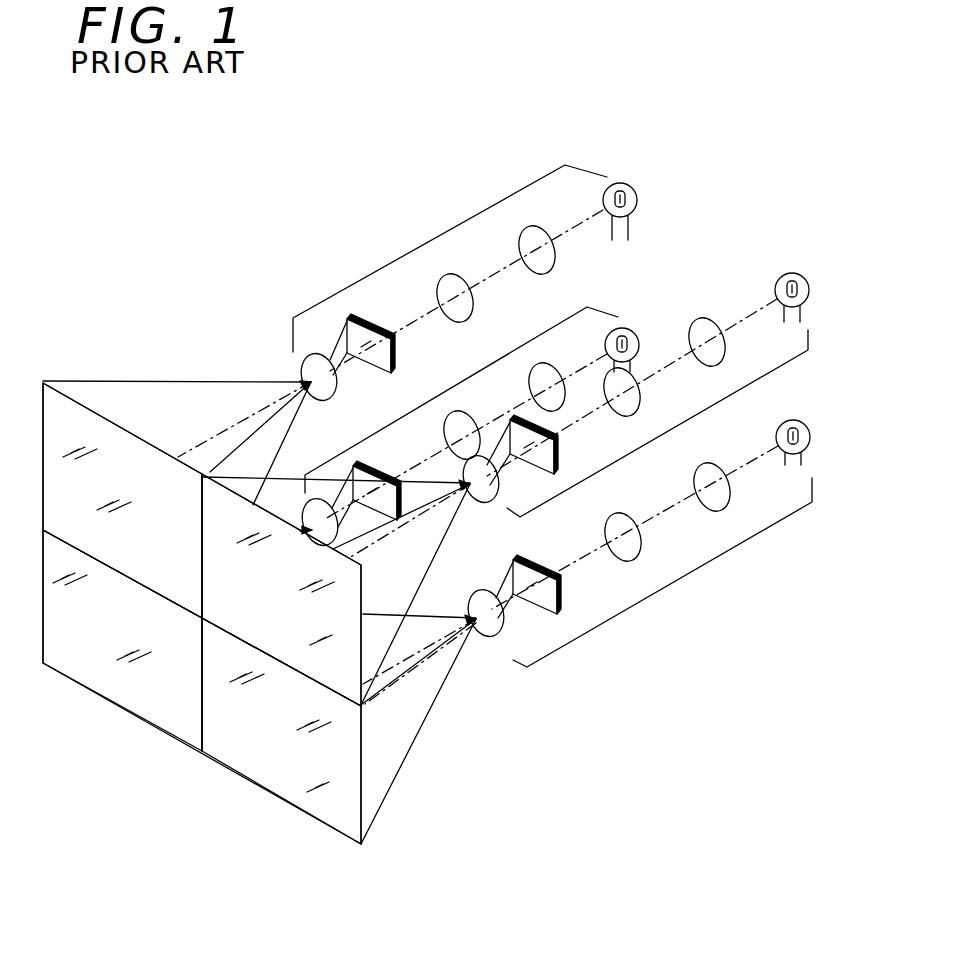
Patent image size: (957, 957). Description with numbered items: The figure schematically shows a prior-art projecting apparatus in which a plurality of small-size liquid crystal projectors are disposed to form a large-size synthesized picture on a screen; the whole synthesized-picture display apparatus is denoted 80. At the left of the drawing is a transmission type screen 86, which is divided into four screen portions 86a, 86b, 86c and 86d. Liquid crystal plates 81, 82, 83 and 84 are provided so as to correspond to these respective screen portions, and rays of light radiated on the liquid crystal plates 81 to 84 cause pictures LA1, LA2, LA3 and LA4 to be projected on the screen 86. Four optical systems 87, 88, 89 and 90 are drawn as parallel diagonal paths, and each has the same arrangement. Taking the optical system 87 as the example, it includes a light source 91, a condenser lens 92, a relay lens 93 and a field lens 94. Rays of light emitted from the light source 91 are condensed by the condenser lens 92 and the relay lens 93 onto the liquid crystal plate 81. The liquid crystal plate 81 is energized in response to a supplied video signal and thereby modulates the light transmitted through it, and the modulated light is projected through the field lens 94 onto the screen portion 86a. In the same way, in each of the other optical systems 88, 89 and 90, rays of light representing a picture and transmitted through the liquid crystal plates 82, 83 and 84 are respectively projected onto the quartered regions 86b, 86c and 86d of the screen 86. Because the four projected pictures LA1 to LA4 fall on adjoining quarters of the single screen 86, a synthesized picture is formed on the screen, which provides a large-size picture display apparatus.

The synthesized-picture display apparatus 80 is at (245, 157).
The liquid crystal plate 81 is at (573, 600).
The liquid crystal plate 82 is at (565, 453).
The liquid crystal plate 83 is at (362, 313).
The liquid crystal plate 84 is at (368, 462).
The transmission type screen 86 is at (152, 725).
The screen portion 86a is at (255, 762).
The screen portion 86b is at (227, 530).
The screen portion 86c is at (70, 427).
The screen portion 86d is at (75, 665).
The optical system 87 is at (695, 572).
The optical system 88 is at (727, 397).
The optical system 89 is at (433, 238).
The optical system 90 is at (452, 385).
The light source 91 is at (795, 417).
The condenser lens 92 is at (730, 513).
The relay lens 93 is at (628, 563).
The field lens 94 is at (483, 637).
The picture LA1 is at (425, 740).
The picture LA2 is at (425, 568).
The picture LA3 is at (163, 378).
The picture LA4 is at (300, 520).